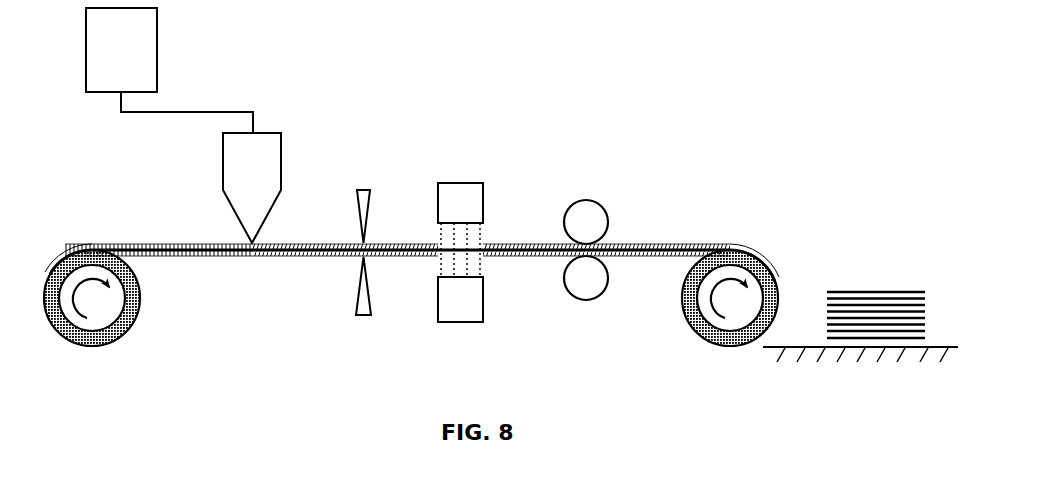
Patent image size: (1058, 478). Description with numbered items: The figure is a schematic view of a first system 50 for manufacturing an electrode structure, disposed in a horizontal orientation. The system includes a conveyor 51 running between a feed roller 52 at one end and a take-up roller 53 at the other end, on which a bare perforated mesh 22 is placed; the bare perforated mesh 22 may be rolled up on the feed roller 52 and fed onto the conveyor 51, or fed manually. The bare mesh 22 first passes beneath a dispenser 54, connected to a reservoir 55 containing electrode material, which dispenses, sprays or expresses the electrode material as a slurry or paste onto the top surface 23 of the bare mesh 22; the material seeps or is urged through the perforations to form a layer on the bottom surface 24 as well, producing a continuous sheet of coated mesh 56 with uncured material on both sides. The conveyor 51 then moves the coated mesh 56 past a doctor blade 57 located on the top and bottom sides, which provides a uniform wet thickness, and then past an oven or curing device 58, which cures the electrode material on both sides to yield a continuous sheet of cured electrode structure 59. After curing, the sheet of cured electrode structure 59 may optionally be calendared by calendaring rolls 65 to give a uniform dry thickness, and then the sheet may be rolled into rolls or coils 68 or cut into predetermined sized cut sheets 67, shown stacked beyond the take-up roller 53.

The first system 50 is at (786, 74).
The reservoir 55 is at (169, 70).
The dispenser 54 is at (252, 188).
The conveyor 51 is at (290, 282).
The feed roller 52 is at (125, 338).
The take-up roller 53 is at (696, 340).
The bare perforated mesh 22 is at (152, 243).
The coated mesh 56 is at (302, 245).
The doctor blade 57 is at (364, 190).
The curing device 58 is at (459, 183).
The cured electrode structure 59 is at (522, 243).
The calendaring rolls 65 is at (596, 203).
The top surface 23 is at (668, 213).
The bottom surface 24 is at (643, 272).
The rolls or coils 68 is at (750, 228).
The cut sheets 67 is at (883, 265).